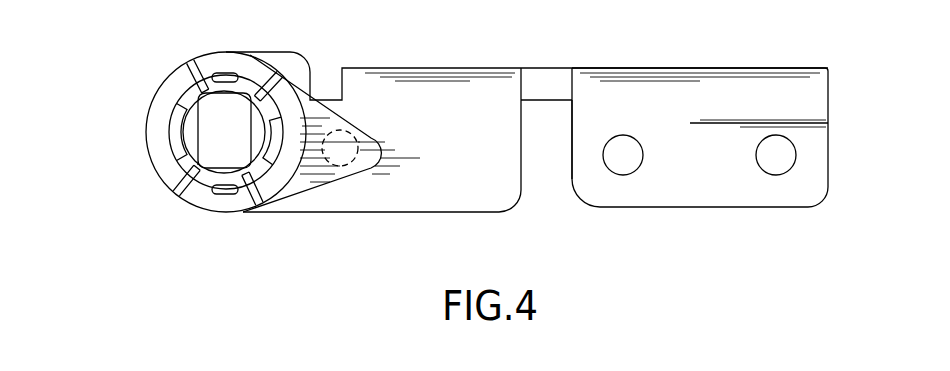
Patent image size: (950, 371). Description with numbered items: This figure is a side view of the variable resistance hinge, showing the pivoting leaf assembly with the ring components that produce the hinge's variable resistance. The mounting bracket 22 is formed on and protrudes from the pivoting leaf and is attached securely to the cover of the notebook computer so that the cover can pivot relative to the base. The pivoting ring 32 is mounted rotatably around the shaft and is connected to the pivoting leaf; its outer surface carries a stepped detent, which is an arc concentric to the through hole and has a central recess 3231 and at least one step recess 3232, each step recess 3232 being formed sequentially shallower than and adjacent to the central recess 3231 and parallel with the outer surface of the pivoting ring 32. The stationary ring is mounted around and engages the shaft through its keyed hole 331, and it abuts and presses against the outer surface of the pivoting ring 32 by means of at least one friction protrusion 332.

The mounting bracket 22 is at (600, 83).
The pivoting ring 32 is at (360, 150).
The keyed hole 331 is at (200, 113).
The friction protrusion 332 is at (175, 93).
The central recess 3231 is at (153, 134).
The step recess 3232 is at (185, 70).